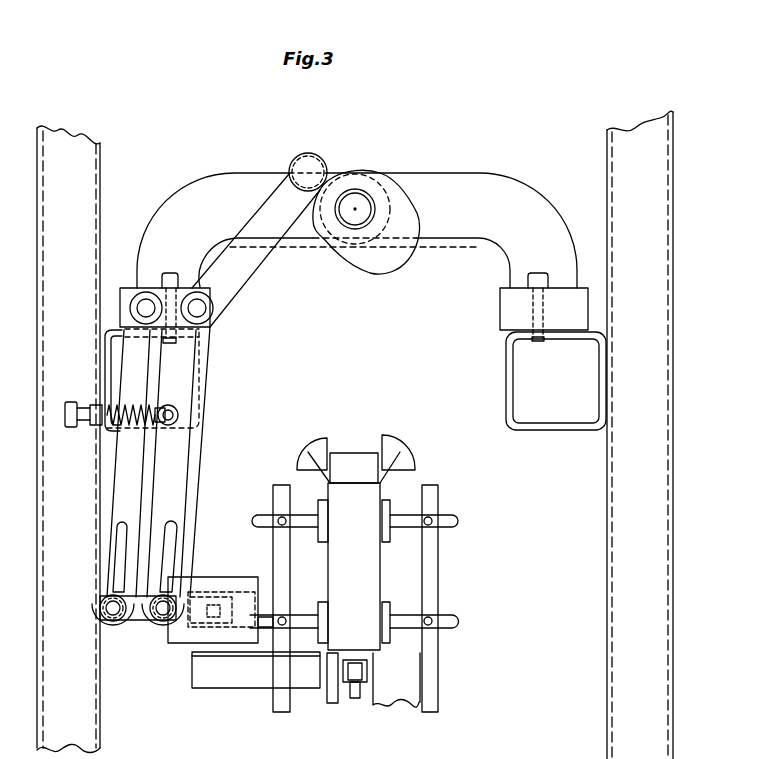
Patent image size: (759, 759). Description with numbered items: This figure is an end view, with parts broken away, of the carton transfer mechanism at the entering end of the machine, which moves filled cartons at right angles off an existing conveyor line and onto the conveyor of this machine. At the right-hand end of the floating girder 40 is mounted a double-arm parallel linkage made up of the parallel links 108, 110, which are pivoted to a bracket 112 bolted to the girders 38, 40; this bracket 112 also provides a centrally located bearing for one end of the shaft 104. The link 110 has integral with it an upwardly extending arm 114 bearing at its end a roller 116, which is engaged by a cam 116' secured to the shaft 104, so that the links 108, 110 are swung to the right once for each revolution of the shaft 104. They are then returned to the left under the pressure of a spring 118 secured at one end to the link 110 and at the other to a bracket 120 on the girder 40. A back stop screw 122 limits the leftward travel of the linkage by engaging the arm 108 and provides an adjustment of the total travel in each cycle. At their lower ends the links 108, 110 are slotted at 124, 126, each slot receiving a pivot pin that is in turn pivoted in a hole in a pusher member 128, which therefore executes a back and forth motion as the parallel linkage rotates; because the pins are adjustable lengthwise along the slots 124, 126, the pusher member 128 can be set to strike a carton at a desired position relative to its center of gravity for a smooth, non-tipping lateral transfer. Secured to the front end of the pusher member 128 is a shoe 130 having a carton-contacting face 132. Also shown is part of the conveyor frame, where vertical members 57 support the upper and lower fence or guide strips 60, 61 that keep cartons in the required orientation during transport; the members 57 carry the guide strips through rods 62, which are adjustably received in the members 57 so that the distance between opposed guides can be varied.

The girder 38 is at (509, 384).
The floating girder 40 is at (106, 353).
The vertical member 57 is at (433, 558).
The upper fence or guide strip 60 is at (389, 534).
The lower fence or guide strip 61 is at (387, 612).
The rod 62 is at (299, 521).
The shaft 104 is at (356, 213).
The link 108 is at (118, 478).
The link 110 is at (190, 456).
The bracket 112 is at (222, 181).
The upwardly extending arm 114 is at (253, 218).
The roller 116 is at (314, 160).
The cam 116' is at (366, 233).
The spring 118 is at (148, 378).
The bracket 120 is at (100, 402).
The back stop screw 122 is at (72, 424).
The slot 124 is at (126, 530).
The slot 126 is at (176, 530).
The pusher member 128 is at (140, 618).
The shoe 130 is at (194, 640).
The carton-contacting face 132 is at (259, 575).